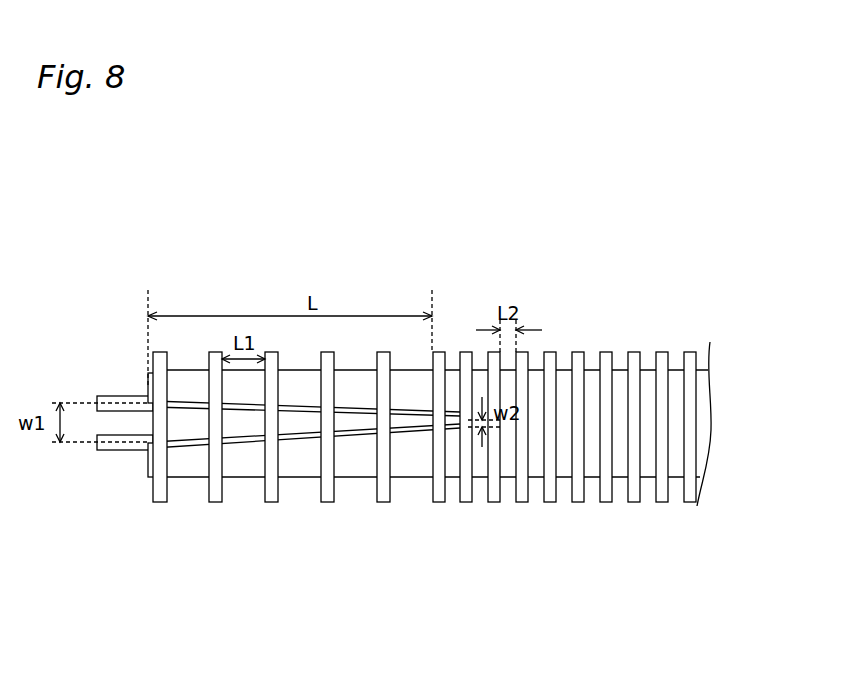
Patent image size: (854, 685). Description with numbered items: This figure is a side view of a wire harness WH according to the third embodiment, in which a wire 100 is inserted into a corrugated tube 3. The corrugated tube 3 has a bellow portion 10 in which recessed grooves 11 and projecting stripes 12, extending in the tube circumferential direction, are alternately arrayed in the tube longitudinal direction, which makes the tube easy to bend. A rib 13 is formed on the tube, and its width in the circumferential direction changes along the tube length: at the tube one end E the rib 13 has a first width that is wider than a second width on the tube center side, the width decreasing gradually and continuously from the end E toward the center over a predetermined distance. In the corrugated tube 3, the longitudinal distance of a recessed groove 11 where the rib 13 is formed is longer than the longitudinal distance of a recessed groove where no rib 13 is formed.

The wire harness WH is at (590, 205).
The corrugated tube 3 is at (590, 322).
The wire 100 is at (108, 396).
The tube one end E is at (148, 384).
The bellow portion 10 is at (429, 493).
The recessed groove 11 is at (203, 477).
The projecting stripe 12 is at (216, 502).
The rib 13 is at (255, 425).